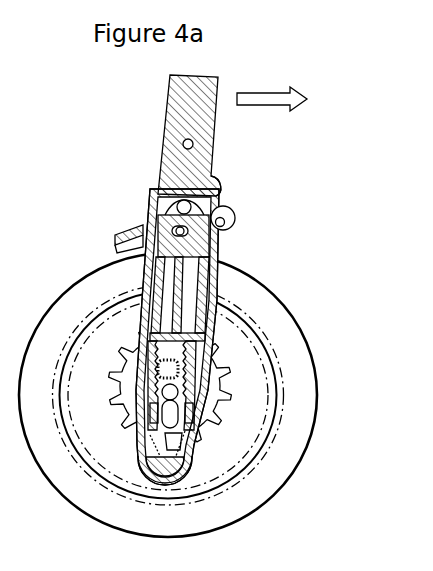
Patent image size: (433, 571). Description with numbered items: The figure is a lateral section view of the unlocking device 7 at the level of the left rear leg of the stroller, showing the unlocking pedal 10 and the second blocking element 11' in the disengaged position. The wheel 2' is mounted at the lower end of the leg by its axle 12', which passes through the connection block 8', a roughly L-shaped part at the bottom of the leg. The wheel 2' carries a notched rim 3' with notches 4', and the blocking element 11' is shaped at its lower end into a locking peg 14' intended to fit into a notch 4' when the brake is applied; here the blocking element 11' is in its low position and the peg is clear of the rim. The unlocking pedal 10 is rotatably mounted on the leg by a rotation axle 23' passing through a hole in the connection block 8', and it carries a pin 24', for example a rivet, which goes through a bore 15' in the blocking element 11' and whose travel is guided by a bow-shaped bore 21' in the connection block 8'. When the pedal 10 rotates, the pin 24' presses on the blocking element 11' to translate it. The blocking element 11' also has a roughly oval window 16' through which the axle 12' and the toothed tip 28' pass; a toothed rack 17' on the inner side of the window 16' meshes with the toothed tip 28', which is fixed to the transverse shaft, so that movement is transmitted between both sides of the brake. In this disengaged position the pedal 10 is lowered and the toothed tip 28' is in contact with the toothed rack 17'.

The unlocking device 7 is at (148, 110).
The connection block 8' is at (168, 289).
The bore 15' is at (136, 217).
The bow-shaped bore 21' is at (229, 176).
The pin 24' is at (263, 182).
The rotation axle 23' is at (266, 218).
The second operating element 10 is at (115, 236).
The wheel 2' is at (189, 381).
The toothed rack 17' is at (183, 386).
The notched rim 3' is at (208, 395).
The axle 12' is at (212, 395).
The window 16' is at (129, 359).
The toothed tip 28' is at (244, 319).
The second blocking element 11' is at (229, 435).
The locking peg 14' is at (221, 492).
The notch 4' is at (126, 506).